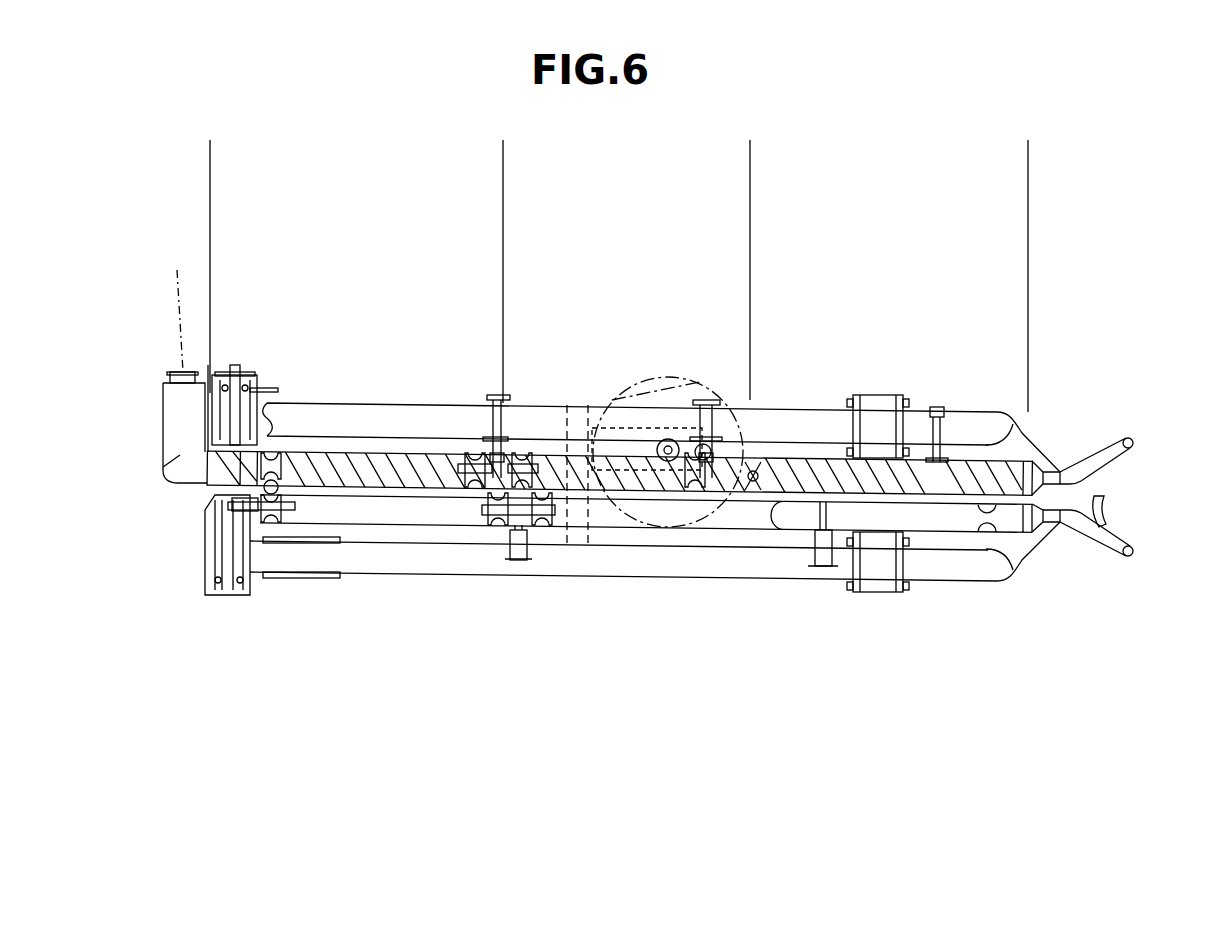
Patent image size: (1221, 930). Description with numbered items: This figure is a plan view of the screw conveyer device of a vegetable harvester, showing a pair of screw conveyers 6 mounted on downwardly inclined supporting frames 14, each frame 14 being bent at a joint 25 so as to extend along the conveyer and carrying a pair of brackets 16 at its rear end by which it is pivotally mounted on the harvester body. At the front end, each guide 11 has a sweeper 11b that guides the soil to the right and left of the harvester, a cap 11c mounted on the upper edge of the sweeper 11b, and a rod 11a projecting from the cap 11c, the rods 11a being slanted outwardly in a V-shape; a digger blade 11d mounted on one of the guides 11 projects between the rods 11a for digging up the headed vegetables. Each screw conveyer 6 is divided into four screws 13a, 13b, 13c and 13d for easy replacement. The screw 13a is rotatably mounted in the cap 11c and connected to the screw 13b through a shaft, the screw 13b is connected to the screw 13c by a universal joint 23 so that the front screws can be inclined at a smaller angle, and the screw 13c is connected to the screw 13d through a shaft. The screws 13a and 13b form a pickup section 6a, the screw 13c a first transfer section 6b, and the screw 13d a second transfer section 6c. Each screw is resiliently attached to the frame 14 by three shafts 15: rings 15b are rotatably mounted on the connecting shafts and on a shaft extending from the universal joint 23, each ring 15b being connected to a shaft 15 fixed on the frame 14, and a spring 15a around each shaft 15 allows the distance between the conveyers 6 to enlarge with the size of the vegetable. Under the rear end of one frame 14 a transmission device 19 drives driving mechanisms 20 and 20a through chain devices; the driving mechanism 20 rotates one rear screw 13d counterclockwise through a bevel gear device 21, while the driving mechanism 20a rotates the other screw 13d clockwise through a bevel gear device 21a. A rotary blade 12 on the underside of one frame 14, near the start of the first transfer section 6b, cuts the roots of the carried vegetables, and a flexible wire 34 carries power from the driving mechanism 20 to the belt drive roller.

The screw conveyer 6 is at (369, 444).
The pickup section 6a is at (1025, 255).
The first transfer section 6b is at (747, 255).
The second transfer section 6c is at (500, 255).
The guide 11 is at (1096, 476).
The rod 11a is at (1110, 553).
The sweeper 11b is at (1025, 550).
The cap 11c is at (1045, 522).
The digger blade 11d is at (1103, 519).
The rotary blade 12 is at (652, 382).
The screw 13a is at (950, 515).
The screw 13b is at (796, 520).
The screw 13c is at (604, 512).
The screw 13d is at (365, 508).
The supporting frame 14 is at (430, 550).
The shaft 15 is at (937, 410).
The spring 15a is at (962, 430).
The ring 15b is at (697, 522).
The bracket 16 is at (312, 574).
The transmission device 19 is at (247, 374).
The driving mechanism 20 is at (165, 438).
The driving mechanism 20a is at (208, 550).
The bevel gear device 21 is at (177, 460).
The bevel gear device 21a is at (207, 503).
The universal joint 23 is at (762, 458).
The joint 25 is at (860, 594).
The flexible wire 34 is at (177, 298).